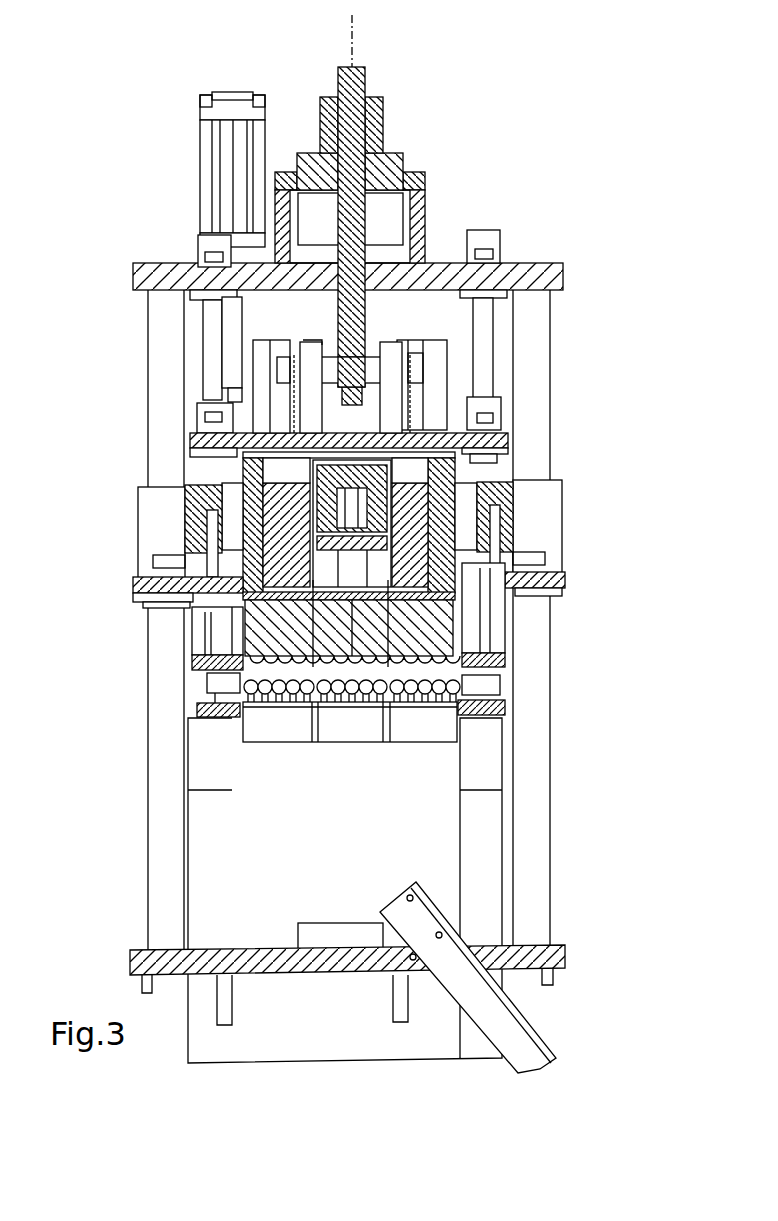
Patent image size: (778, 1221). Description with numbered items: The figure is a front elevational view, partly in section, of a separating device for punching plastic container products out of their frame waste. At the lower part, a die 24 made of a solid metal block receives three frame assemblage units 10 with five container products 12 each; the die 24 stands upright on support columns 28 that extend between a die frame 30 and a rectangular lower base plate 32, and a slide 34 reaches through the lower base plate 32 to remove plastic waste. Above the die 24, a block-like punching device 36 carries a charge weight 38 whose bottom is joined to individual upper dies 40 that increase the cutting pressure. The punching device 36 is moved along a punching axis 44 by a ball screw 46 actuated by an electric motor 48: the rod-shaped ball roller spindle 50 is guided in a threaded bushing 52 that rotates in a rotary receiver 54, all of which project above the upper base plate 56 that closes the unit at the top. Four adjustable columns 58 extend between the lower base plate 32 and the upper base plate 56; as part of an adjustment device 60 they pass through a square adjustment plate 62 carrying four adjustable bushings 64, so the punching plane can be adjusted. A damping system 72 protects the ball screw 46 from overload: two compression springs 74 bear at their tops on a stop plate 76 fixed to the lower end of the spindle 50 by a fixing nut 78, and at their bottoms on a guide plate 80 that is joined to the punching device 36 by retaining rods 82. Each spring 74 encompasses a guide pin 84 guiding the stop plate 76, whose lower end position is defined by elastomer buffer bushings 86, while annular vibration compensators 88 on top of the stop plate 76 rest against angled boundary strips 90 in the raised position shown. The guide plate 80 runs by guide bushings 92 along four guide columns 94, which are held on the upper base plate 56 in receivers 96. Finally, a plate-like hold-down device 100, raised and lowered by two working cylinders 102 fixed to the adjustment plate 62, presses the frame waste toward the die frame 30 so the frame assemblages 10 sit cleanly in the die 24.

The frame assemblage 10 is at (352, 709).
The container product 12 is at (306, 700).
The die 24 is at (435, 740).
The support columns 28 is at (213, 893).
The die frame 30 is at (490, 678).
The lower base plate 32 is at (567, 952).
The slide 34 is at (522, 1040).
The punching device 36 is at (246, 478).
The charge weight 38 is at (455, 475).
The upper dies 40 is at (258, 640).
The punching axis 44 is at (350, 34).
The ball screw 46 is at (400, 167).
The electric motor 48 is at (235, 108).
The ball roller spindle 50 is at (366, 82).
The threaded bushing 52 is at (386, 118).
The rotary receiver 54 is at (427, 195).
The upper base plate 56 is at (545, 266).
The adjustable columns 58 is at (165, 373).
The adjustment device 60 is at (168, 537).
The adjustment plate 62 is at (145, 590).
The adjustable bushings 64 is at (160, 527).
The damping system 72 is at (418, 347).
The compression springs 74 is at (303, 400).
The stop plate 76 is at (370, 388).
The fixing nut 78 is at (633, 408).
The guide plate 80 is at (507, 438).
The retaining rods 82 is at (257, 484).
The guide pin 84 is at (272, 358).
The buffer bushings 86 is at (205, 408).
The vibration compensators 88 is at (300, 390).
The boundary strips 90 is at (238, 352).
The guide bushings 92 is at (212, 418).
The guide columns 94 is at (210, 312).
The receivers 96 is at (207, 242).
The hold-down device 100 is at (188, 626).
The working cylinders 102 is at (190, 510).